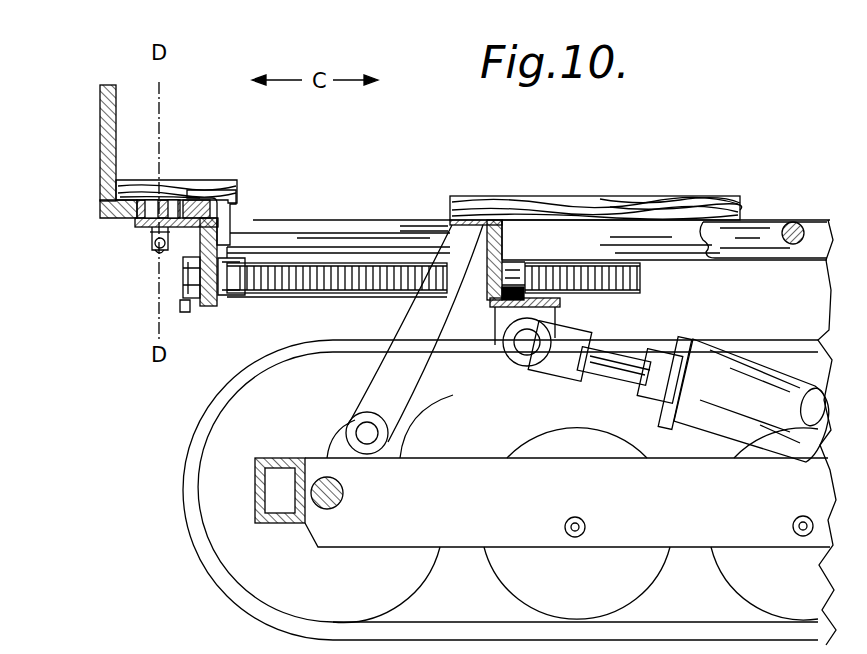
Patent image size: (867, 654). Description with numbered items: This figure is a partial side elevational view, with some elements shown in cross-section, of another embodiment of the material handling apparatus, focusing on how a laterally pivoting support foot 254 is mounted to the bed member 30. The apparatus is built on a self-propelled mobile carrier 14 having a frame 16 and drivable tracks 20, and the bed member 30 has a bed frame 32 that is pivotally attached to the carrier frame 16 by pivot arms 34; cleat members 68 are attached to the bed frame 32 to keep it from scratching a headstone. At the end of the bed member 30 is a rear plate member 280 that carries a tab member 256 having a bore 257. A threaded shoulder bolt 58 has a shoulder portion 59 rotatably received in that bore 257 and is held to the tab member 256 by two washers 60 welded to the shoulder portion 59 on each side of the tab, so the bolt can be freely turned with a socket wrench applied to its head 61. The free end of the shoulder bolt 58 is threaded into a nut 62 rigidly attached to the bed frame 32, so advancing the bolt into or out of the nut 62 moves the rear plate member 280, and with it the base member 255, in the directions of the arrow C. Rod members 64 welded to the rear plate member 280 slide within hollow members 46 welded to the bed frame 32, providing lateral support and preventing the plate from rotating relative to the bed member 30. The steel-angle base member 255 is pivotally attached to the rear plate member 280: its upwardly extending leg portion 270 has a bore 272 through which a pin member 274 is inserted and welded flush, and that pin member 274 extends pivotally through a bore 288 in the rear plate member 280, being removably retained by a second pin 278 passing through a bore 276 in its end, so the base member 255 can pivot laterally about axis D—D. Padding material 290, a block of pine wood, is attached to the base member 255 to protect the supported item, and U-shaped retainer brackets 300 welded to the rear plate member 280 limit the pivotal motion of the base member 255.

The mobile carrier 14 is at (176, 484).
The frame 16 is at (490, 516).
The drivable tracks 20 is at (193, 547).
The bed member 30 is at (487, 190).
The frame 32 is at (506, 232).
The pivot arms 34 is at (400, 392).
The hollow member 46 is at (582, 230).
The shoulder bolt 58 is at (340, 287).
The shoulder portion 59 is at (297, 242).
The washers 60 is at (250, 232).
The head 61 is at (184, 312).
The nut 62 is at (563, 304).
The rod members 64 is at (428, 228).
The cleat members 68 is at (670, 208).
The support foot 254 is at (96, 150).
The base member 255 is at (114, 85).
The tab member 256 is at (212, 310).
The bore 257 is at (246, 287).
The leg portion 270 is at (143, 221).
The bore 272 is at (180, 198).
The pin member 274 is at (176, 280).
The bore 276 is at (163, 215).
The second pin 278 is at (156, 258).
The rear plate member 280 is at (150, 232).
The bore 288 is at (154, 246).
The padding material 290 is at (238, 184).
The U-shaped retainer brackets 300 is at (226, 224).